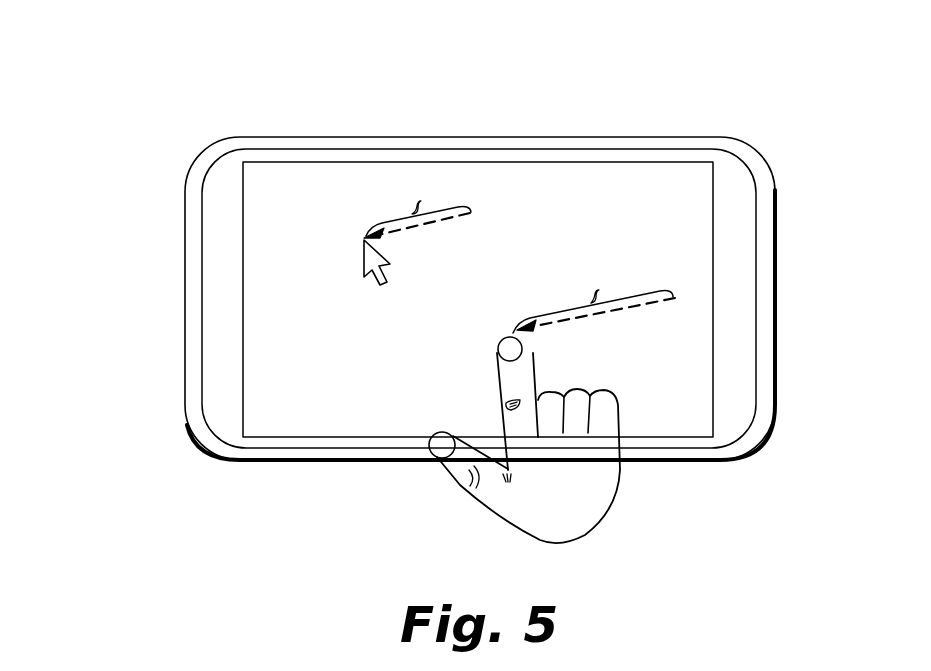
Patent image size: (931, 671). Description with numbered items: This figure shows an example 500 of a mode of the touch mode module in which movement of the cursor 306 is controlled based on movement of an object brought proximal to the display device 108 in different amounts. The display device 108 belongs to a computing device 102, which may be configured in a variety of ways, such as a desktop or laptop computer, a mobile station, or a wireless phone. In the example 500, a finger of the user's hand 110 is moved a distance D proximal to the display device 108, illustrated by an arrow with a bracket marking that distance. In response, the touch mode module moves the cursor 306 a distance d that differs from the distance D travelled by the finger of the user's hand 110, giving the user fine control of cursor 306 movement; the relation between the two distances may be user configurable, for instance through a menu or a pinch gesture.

The example 500 is at (172, 72).
The computing device 102 is at (777, 290).
The display device 108 is at (300, 424).
The cursor 306 is at (364, 238).
The user's hand 110 is at (582, 492).